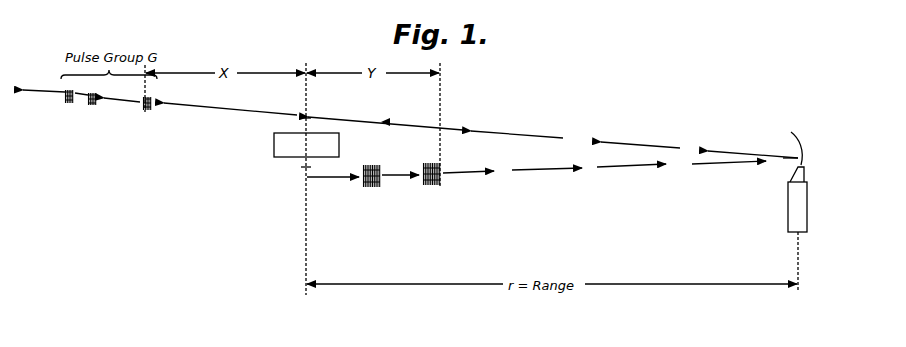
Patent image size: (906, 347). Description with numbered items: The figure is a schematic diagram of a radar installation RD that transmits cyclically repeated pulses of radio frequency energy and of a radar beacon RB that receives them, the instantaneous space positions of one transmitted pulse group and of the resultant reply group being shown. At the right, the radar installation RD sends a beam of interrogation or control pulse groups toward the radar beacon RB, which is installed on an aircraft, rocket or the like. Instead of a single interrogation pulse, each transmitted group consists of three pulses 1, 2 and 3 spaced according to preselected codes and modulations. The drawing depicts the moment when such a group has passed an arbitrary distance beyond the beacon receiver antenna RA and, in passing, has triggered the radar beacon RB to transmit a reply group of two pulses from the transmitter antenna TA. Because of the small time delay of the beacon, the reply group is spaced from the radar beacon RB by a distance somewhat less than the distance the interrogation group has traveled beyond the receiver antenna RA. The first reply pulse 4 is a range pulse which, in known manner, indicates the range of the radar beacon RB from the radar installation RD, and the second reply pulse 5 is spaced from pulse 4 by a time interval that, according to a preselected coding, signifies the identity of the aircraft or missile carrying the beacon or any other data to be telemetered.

The first interrogation pulse 1 is at (69, 90).
The second interrogation pulse 2 is at (94, 91).
The third interrogation pulse 3 is at (149, 96).
The first reply pulse 4 is at (431, 166).
The second reply pulse 5 is at (371, 168).
The beacon receiver antenna RA is at (304, 121).
The radar beacon RB is at (340, 145).
The transmitter antenna TA is at (304, 165).
The radar installation RD is at (788, 205).